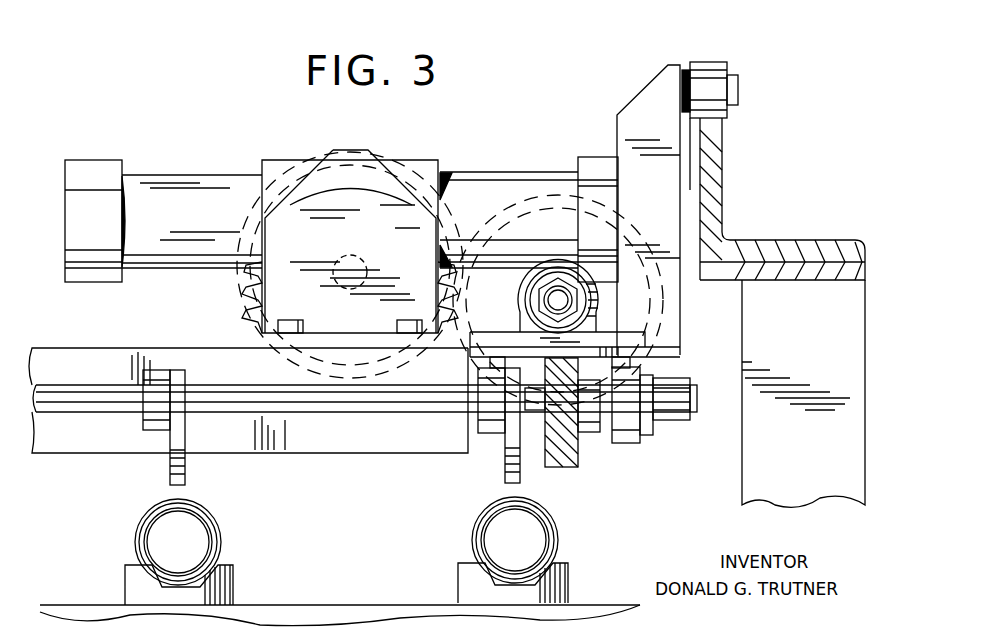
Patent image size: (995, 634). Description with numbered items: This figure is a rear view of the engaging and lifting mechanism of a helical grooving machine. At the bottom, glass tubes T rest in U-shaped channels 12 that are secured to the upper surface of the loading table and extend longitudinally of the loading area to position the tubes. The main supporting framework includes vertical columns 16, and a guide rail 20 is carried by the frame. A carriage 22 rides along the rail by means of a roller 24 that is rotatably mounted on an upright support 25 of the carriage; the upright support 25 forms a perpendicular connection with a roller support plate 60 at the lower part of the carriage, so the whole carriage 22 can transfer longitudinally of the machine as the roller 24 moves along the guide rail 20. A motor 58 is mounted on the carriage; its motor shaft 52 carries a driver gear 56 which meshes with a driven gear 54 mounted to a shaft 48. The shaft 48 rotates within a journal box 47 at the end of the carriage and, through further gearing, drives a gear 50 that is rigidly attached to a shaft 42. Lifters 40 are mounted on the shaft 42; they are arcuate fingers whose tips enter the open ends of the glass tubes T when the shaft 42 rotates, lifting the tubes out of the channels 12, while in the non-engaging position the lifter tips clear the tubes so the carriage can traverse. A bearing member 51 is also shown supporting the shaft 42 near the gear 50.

The U-shaped channel 12 is at (225, 574).
The vertical column 16 is at (757, 472).
The guide rail 20 is at (712, 182).
The carriage 22 is at (280, 152).
The roller 24 is at (708, 62).
The upright support 25 is at (640, 110).
The lifter 40 is at (185, 470).
The shaft 42 is at (338, 403).
The journal box 47 is at (590, 320).
The shaft 48 is at (546, 300).
The gear 50 is at (570, 458).
The bearing bracket 51 is at (642, 438).
The motor shaft 52 is at (352, 258).
The driven gear 54 is at (478, 325).
The driver gear 56 is at (258, 298).
The motor 58 is at (196, 224).
The roller support plate 60 is at (95, 445).
The glass tube T is at (220, 530).